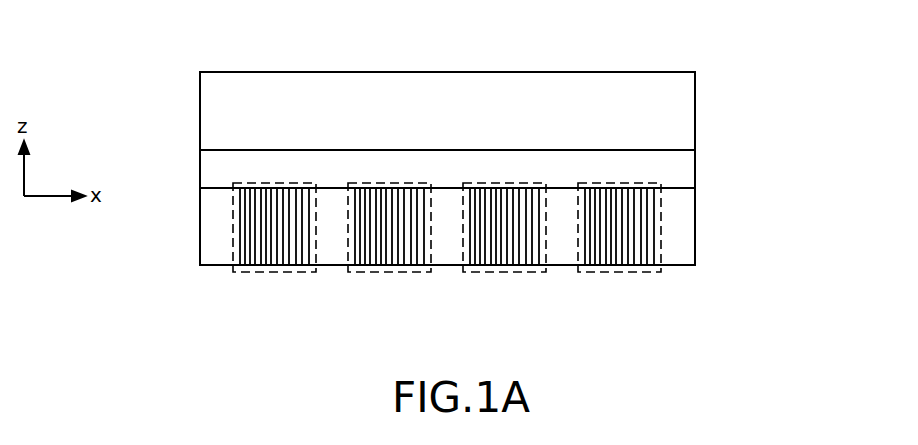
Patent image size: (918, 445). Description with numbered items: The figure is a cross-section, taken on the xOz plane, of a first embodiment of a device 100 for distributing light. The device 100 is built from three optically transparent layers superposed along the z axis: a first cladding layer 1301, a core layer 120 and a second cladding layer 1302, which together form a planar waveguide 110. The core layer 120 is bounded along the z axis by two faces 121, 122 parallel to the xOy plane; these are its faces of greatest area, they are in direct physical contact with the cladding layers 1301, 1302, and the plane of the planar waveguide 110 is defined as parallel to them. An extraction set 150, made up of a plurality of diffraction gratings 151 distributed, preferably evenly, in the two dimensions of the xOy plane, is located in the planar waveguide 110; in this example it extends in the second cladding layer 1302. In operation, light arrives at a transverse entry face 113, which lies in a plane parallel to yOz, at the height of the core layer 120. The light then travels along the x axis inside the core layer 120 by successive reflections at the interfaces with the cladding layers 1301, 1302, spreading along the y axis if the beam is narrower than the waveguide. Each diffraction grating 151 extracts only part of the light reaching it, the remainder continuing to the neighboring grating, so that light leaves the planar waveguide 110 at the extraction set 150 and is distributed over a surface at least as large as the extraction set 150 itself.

The device for distributing light 100 is at (690, 49).
The planar waveguide 110 is at (823, 68).
The entry face 113 is at (200, 82).
The core layer 120 is at (683, 168).
The face of the core layer 121 is at (440, 188).
The face of the core layer 122 is at (363, 150).
The first cladding layer 1301 is at (683, 105).
The second cladding layer 1302 is at (683, 233).
The extraction set 150 is at (261, 320).
The diffraction grating 151 is at (276, 272).